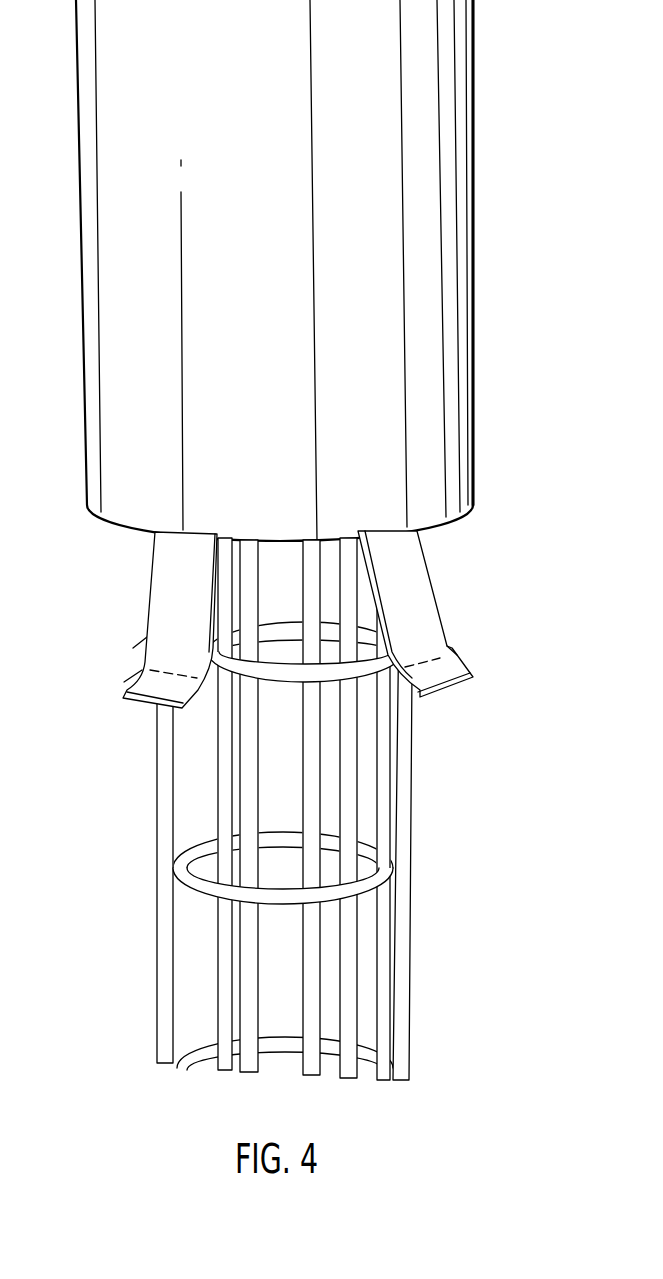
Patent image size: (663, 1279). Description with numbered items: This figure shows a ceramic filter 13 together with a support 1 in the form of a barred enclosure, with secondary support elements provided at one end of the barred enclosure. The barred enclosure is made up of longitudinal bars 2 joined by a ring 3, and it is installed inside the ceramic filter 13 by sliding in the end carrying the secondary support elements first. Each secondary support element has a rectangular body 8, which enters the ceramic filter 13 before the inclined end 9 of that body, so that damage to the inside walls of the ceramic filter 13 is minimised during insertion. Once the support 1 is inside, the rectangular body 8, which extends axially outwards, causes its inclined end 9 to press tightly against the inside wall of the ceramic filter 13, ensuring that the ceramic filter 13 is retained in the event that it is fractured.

The support 1 is at (130, 1008).
The support cage bars 2 is at (402, 933).
The cage ring 3 is at (385, 872).
The rectangular body 8 is at (403, 588).
The inclined end 9 is at (157, 692).
The ceramic filter 13 is at (448, 280).